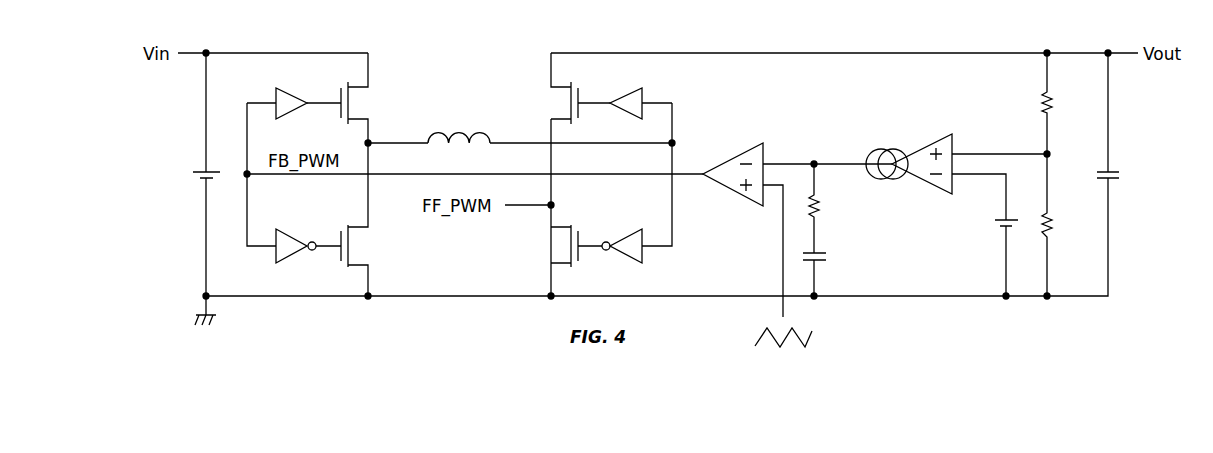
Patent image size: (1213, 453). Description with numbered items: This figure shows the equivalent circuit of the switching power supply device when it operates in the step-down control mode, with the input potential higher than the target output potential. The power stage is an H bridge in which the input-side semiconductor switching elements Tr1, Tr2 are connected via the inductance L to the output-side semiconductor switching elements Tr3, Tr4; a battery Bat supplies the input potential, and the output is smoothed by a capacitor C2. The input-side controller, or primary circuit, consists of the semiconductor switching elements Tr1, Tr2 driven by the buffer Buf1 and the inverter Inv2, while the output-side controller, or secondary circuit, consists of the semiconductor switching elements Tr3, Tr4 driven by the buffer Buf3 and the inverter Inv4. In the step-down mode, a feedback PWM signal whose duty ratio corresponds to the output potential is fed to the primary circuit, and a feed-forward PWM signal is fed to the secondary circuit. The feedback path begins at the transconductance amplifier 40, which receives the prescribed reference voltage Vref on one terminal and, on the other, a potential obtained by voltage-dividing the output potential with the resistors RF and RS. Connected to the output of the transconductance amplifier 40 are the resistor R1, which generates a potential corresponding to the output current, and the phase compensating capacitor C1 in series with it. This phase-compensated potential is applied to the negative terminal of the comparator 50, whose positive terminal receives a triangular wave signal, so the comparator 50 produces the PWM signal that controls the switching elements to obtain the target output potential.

The comparator 50 is at (738, 158).
The transconductance amplifier 40 is at (921, 150).
The semiconductor switching element Tr1 is at (352, 98).
The semiconductor switching element Tr2 is at (369, 219).
The semiconductor switching element Tr3 is at (565, 174).
The semiconductor switching element Tr4 is at (549, 246).
The buffer Buf1 is at (278, 93).
The buffer Buf3 is at (638, 93).
The inverter Inv2 is at (306, 236).
The inverter Inv4 is at (611, 236).
The inductance L is at (459, 128).
The resistor R1 is at (827, 208).
The capacitor C1 is at (828, 273).
The resistor RF is at (1060, 103).
The resistor RS is at (1061, 225).
The capacitor C2 is at (1121, 121).
The battery Bat is at (190, 174).
The reference voltage Vref is at (986, 257).